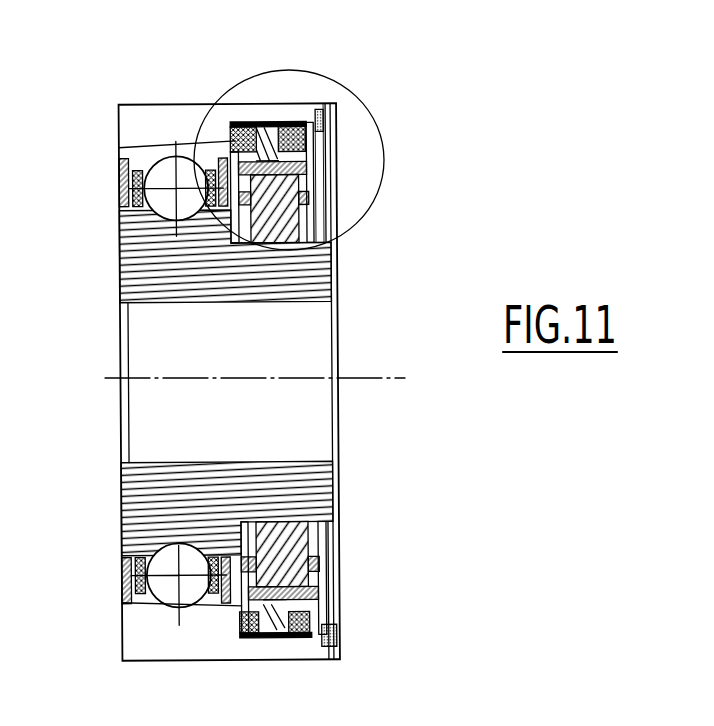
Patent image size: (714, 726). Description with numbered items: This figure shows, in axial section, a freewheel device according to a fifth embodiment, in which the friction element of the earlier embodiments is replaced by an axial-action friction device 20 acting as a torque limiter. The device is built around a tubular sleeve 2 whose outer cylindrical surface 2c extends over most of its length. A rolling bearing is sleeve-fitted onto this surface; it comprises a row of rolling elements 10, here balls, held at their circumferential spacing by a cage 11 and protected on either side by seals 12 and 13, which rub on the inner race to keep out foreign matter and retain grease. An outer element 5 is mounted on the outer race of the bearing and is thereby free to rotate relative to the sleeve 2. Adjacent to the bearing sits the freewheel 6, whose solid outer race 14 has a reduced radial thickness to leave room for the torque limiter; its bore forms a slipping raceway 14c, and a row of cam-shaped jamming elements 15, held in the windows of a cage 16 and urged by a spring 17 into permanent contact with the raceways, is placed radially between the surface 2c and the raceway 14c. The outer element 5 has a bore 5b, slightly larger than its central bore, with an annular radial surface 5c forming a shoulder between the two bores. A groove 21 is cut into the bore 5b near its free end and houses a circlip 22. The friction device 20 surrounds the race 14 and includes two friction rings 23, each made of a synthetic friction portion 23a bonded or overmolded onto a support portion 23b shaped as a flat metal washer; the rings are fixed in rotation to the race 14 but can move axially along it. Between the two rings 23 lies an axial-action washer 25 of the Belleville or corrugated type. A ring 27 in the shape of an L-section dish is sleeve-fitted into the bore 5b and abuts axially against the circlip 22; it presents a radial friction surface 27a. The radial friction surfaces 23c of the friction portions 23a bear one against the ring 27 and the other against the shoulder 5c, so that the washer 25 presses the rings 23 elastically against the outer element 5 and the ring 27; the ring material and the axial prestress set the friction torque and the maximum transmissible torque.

The tubular sleeve 2 is at (323, 278).
The outer cylindrical surface 2c is at (325, 485).
The outer element 5 is at (140, 124).
The bore 5b is at (247, 124).
The annular radial surface 5c is at (225, 140).
The freewheel 6 is at (343, 207).
The rolling elements 10 is at (162, 605).
The cage 11 is at (121, 165).
The seal 12 is at (122, 196).
The seal 13 is at (235, 612).
The outer race 14 is at (305, 170).
The slipping raceway 14c is at (302, 515).
The jamming elements 15 is at (285, 222).
The cage 16 is at (310, 198).
The spring 17 is at (325, 540).
The axial-action friction device 20 is at (276, 112).
The groove 21 is at (333, 108).
The circlip 22 is at (330, 132).
The friction rings 23 is at (148, 140).
The friction portion 23a is at (242, 633).
The support portion 23b is at (268, 628).
The radial friction surfaces 23c is at (178, 138).
The axial-action washer 25 is at (268, 126).
The ring 27 is at (322, 110).
The radial friction surface 27a is at (312, 122).